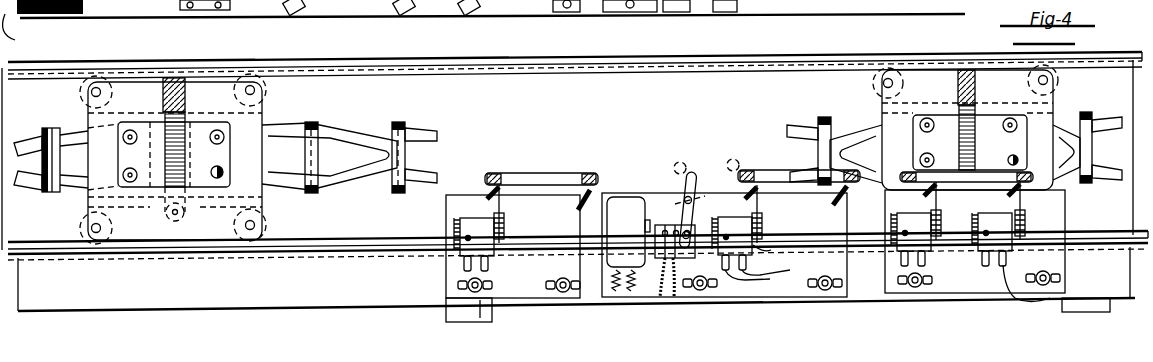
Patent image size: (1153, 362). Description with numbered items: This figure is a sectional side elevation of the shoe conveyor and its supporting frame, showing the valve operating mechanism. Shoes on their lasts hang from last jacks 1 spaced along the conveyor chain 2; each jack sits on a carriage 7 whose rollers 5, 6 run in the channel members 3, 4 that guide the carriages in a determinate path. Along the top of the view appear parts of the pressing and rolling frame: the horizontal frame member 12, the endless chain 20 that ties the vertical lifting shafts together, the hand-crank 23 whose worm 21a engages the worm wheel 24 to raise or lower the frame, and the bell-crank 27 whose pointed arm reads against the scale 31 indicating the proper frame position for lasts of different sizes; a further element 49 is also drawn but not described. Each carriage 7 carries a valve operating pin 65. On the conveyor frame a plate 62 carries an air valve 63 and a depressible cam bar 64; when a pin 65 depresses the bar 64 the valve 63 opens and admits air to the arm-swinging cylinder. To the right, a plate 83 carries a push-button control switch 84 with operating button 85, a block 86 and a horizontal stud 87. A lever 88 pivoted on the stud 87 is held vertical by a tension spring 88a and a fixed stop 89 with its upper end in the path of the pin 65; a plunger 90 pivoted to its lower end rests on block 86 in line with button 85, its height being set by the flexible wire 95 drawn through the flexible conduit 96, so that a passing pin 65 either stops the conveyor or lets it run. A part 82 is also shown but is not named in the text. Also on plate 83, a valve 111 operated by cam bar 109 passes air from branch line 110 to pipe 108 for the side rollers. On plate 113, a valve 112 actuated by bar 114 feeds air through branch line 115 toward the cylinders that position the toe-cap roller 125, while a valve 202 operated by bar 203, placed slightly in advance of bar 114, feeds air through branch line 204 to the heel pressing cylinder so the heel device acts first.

The last jack 1 is at (160, 86).
The conveyor chain 2 is at (340, 137).
The channel member 3 is at (489, 71).
The channel member 4 is at (393, 215).
The roller 5 is at (76, 95).
The roller 6 is at (81, 226).
The carriage 7 is at (240, 152).
The horizontal frame member 12 is at (458, 15).
The endless chain 20 is at (965, 14).
The worm 21a is at (29, 32).
The hand-crank 23 is at (341, 7).
The worm wheel 24 is at (75, 18).
The bell-crank 27 is at (256, 7).
The scale 31 is at (177, 7).
The connector 49 is at (305, 14).
The plate 62 is at (448, 262).
The air valve 63 is at (517, 255).
The depressible cam bar 64 is at (557, 175).
The valve operating pin 65 is at (215, 174).
The adjusting rod 82 is at (506, 229).
The plate 83 is at (799, 206).
The push-button control switch 84 is at (618, 200).
The operating button 85 is at (648, 222).
The block 86 is at (660, 240).
The horizontal stud 87 is at (730, 160).
The lever 88 is at (690, 178).
The tension spring 88a is at (700, 226).
The fixed stop 89 is at (732, 243).
The plunger 90 is at (677, 210).
The flexible wire 95 is at (660, 291).
The flexible conduit 96 is at (670, 292).
The pipe 108 is at (757, 282).
The cam bar 109 is at (776, 172).
The branch line 110 is at (782, 265).
The valve 111 is at (777, 247).
The valve 112 is at (1012, 256).
The plate 113 is at (683, 296).
The bar 114 is at (979, 185).
The branch line 115 is at (1092, 285).
The roller 125 is at (796, 7).
The valve 202 is at (975, 241).
The bar 203 is at (915, 172).
The branch line 204 is at (905, 296).